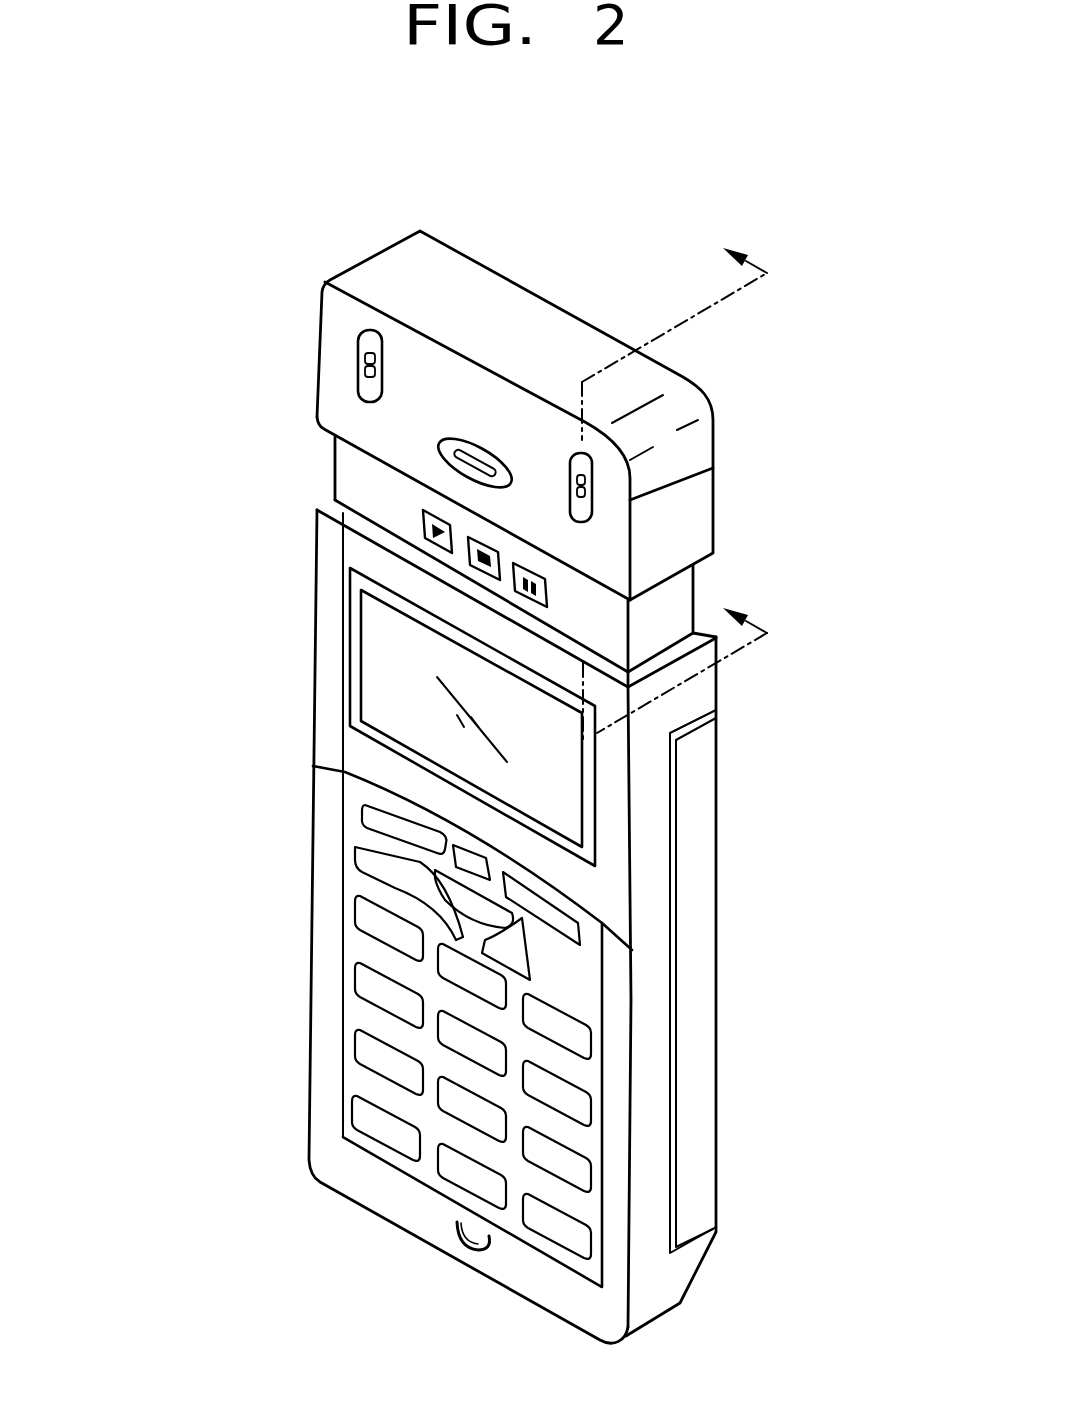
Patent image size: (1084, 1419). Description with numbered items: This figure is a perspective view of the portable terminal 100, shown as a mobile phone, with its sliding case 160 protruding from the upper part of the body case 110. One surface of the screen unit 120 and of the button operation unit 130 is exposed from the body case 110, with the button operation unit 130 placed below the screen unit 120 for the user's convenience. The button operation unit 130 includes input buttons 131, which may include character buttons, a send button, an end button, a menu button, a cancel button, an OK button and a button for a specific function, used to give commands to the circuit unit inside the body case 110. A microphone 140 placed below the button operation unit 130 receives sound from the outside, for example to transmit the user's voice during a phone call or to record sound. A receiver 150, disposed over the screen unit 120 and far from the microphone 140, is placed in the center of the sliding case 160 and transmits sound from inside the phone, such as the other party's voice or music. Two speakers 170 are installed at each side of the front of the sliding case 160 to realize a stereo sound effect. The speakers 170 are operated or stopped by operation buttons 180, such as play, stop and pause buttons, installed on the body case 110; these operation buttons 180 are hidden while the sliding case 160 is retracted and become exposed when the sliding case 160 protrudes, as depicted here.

The portable terminal 100 is at (288, 250).
The body case 110 is at (703, 693).
The screen unit 120 is at (393, 678).
The button operation unit 130 is at (316, 947).
The input buttons 131 is at (370, 857).
The microphone 140 is at (463, 1249).
The receiver 150 is at (447, 450).
The sliding case 160 is at (693, 517).
The speakers 170 is at (340, 366).
The operation buttons 180 is at (427, 523).